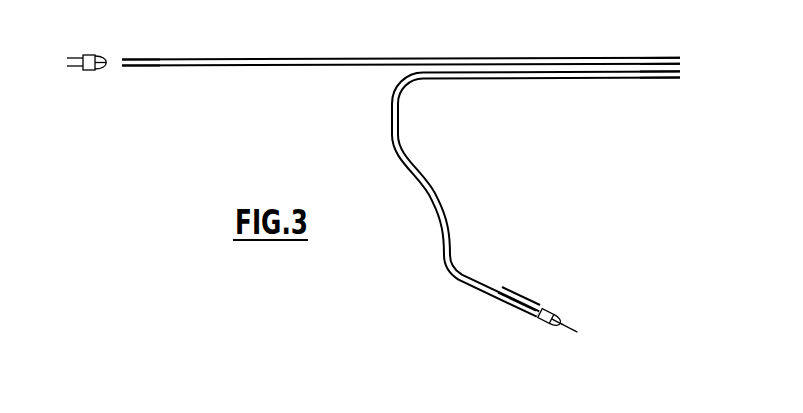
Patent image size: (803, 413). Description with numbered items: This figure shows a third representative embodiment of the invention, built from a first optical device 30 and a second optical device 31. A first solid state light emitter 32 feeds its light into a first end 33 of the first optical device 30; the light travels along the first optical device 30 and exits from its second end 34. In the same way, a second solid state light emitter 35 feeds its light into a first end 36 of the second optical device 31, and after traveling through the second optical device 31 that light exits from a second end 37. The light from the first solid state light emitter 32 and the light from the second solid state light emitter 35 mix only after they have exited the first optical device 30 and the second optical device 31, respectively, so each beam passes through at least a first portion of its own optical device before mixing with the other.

The first optical device 30 is at (364, 57).
The second optical device 31 is at (499, 81).
The first solid state light emitter 32 is at (92, 71).
The first end of the first optical device 33 is at (124, 57).
The second end of the first optical device 34 is at (666, 56).
The second solid state light emitter 35 is at (554, 327).
The first end of the second optical device 36 is at (526, 304).
The second end of the second optical device 37 is at (666, 79).